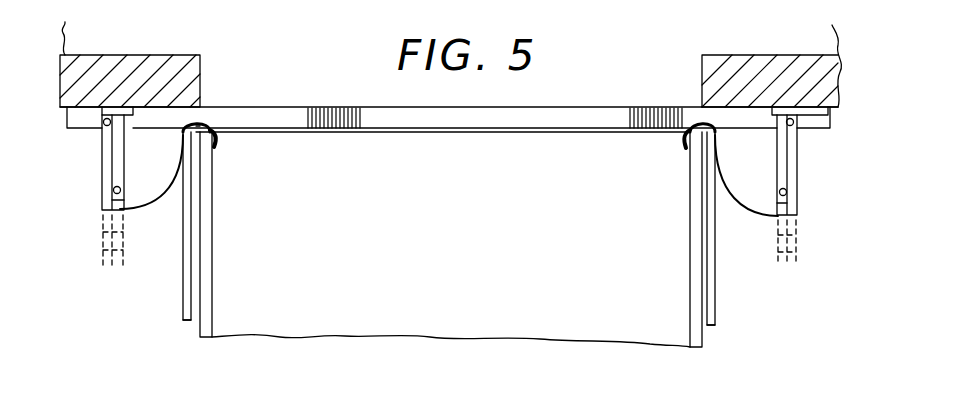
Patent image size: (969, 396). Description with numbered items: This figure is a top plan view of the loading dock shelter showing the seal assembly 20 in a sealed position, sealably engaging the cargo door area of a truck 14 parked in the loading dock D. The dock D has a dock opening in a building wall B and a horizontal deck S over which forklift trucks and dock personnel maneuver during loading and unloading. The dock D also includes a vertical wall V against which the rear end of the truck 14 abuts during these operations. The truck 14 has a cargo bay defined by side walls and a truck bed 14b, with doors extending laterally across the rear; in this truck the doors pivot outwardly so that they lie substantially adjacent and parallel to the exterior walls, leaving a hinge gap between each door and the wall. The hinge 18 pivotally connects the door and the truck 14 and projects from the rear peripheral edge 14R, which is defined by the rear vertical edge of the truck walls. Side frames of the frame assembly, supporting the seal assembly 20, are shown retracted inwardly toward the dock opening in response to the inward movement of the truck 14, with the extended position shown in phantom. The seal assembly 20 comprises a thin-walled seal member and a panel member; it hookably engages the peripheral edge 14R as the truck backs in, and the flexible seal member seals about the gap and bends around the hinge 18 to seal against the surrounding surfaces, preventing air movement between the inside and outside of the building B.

The building wall B is at (177, 65).
The loading dock D is at (655, 89).
The deck S is at (322, 65).
The vertical wall V is at (459, 130).
The rear peripheral edge 14R is at (204, 127).
The truck 14 is at (420, 338).
The truck bed 14b is at (512, 291).
The hinge 18 is at (203, 152).
The seal assembly 20 is at (170, 157).